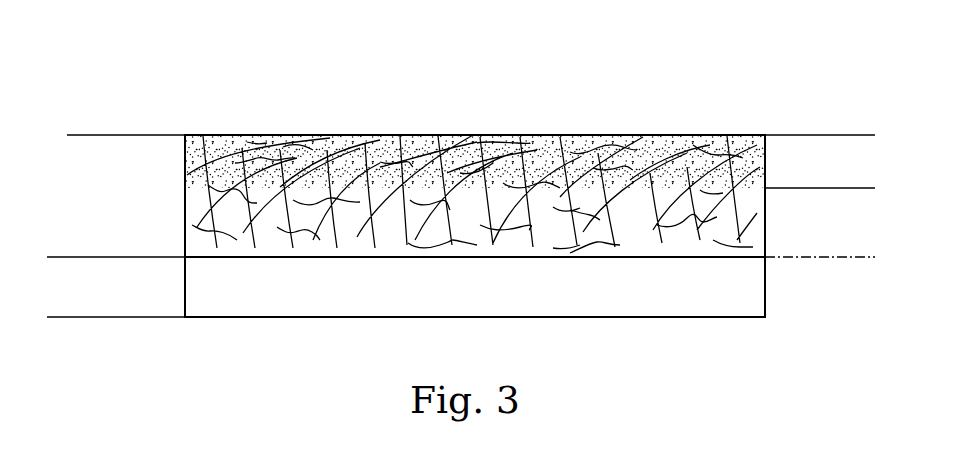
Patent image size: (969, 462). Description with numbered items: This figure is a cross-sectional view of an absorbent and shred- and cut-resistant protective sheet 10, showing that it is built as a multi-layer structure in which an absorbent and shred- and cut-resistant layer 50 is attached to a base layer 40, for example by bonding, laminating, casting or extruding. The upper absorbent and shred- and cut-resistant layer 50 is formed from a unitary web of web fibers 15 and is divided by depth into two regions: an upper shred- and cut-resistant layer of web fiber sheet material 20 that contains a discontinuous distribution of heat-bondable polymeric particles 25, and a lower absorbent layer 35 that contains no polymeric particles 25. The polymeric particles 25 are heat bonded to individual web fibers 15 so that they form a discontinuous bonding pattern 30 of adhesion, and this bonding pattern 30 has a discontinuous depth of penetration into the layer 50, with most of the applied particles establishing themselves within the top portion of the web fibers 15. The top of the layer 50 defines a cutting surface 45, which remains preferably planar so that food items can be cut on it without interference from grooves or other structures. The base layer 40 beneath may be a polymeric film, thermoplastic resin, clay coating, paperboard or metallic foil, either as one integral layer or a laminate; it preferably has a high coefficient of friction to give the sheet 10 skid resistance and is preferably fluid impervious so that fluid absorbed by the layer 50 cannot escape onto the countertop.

The protective sheet 10 is at (750, 115).
The web fibers 15 is at (667, 153).
The web fiber sheet material 20 is at (862, 90).
The heat-bondable polymeric particles 25 is at (333, 152).
The discontinuous bonding pattern 30 is at (540, 150).
The absorbent layer 35 is at (807, 160).
The base layer 40 is at (56, 212).
The cutting surface 45 is at (380, 133).
The absorbent and shred- and cut-resistant layer 50 is at (89, 147).